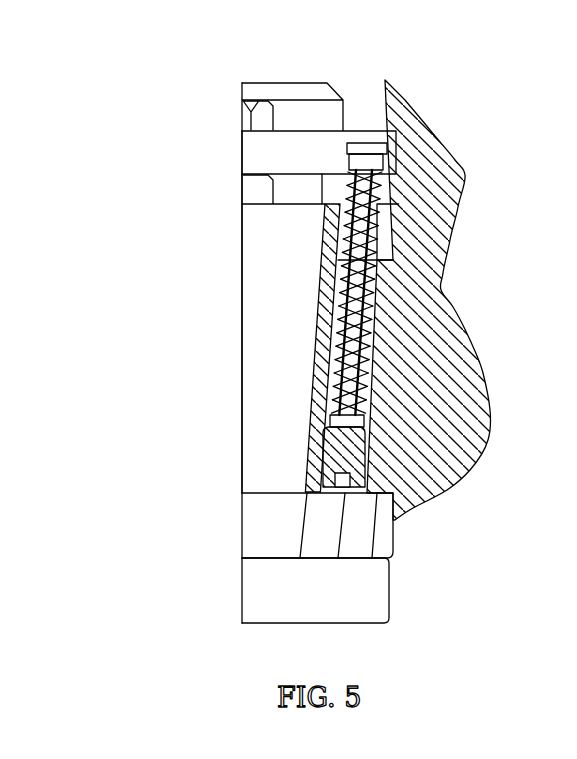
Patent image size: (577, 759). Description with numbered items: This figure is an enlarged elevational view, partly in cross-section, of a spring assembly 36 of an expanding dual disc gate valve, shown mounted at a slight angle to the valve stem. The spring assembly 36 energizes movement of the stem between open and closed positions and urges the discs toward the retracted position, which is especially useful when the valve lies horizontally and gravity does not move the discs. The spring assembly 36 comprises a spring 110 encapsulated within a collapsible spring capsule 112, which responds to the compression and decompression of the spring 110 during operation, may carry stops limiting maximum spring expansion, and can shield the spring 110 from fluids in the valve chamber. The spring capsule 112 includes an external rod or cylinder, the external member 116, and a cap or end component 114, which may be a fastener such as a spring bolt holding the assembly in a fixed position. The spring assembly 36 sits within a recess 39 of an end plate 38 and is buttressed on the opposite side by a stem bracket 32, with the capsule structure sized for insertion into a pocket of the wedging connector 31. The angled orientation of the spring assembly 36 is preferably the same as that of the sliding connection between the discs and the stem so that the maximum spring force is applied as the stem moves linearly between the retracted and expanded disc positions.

The spring assembly 36 is at (304, 320).
The end plate 38 is at (260, 163).
The recess 39 is at (368, 148).
The wedging connector 31 is at (258, 322).
The external member 116 is at (377, 190).
The spring 110 is at (365, 350).
The spring capsule 112 is at (363, 390).
The end component 114 is at (325, 460).
The stem bracket 32 is at (375, 600).